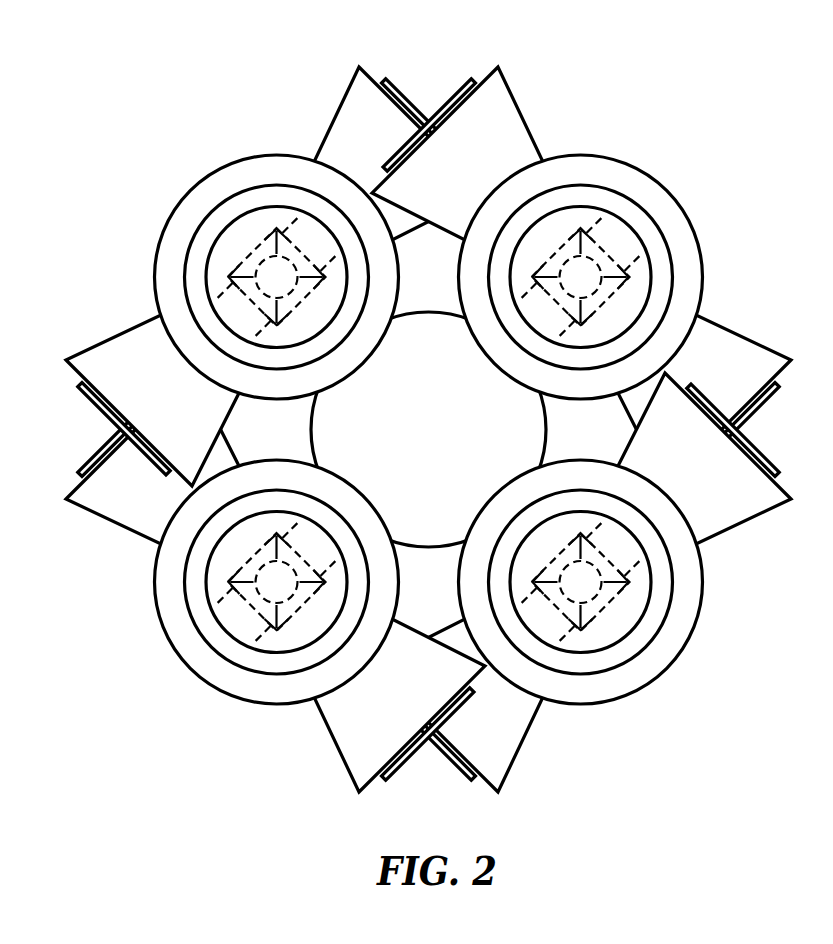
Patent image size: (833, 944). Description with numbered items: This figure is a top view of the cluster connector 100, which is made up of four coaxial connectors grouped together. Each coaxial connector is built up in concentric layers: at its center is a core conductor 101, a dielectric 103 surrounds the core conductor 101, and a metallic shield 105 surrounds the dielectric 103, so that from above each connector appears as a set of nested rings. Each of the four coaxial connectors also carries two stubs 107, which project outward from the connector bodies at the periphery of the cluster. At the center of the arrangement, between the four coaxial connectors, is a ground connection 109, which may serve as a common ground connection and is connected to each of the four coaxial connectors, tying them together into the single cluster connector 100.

The cluster connector 100 is at (443, 413).
The core conductor 101 is at (595, 257).
The dielectric 103 is at (648, 253).
The metallic shield 105 is at (702, 273).
The stubs 107 is at (447, 96).
The ground connection 109 is at (505, 420).